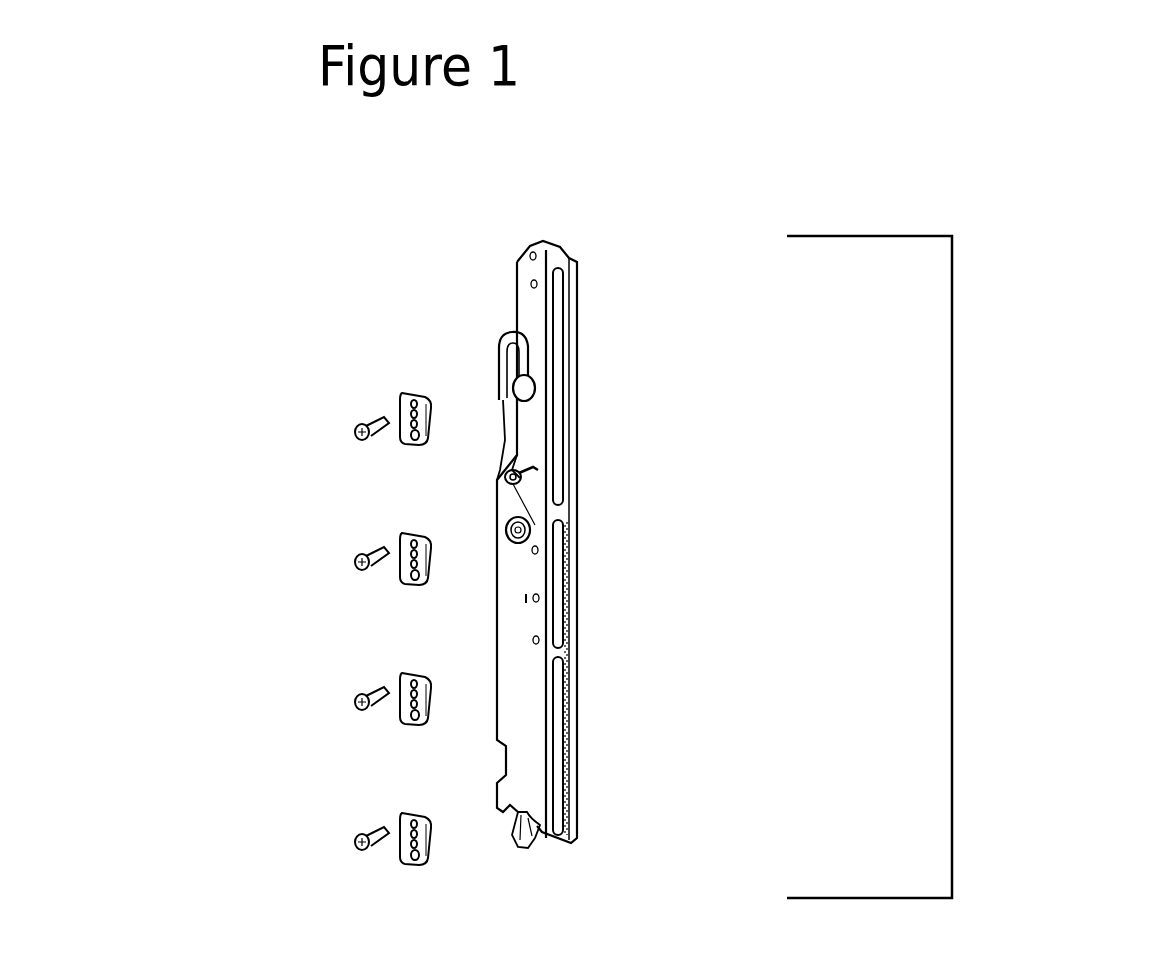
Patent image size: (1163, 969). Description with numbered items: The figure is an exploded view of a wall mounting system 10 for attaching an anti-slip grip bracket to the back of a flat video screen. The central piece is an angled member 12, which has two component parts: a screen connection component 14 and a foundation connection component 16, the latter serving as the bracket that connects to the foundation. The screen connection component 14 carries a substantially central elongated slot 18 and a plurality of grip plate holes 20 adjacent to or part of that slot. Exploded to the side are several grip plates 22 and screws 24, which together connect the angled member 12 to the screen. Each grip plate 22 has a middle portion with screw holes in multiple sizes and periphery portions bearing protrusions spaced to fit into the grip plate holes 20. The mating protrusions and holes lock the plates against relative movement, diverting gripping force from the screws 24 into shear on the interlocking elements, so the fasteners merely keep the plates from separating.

The wall mounting system 10 is at (952, 523).
The angled member 12 is at (533, 501).
The screen connection component 14 is at (570, 509).
The foundation connection component 16 is at (518, 316).
The substantially central elongated slot 18 is at (565, 666).
The grip plate holes 20 is at (572, 748).
The grip plate 22 is at (385, 674).
The screws 24 is at (338, 425).